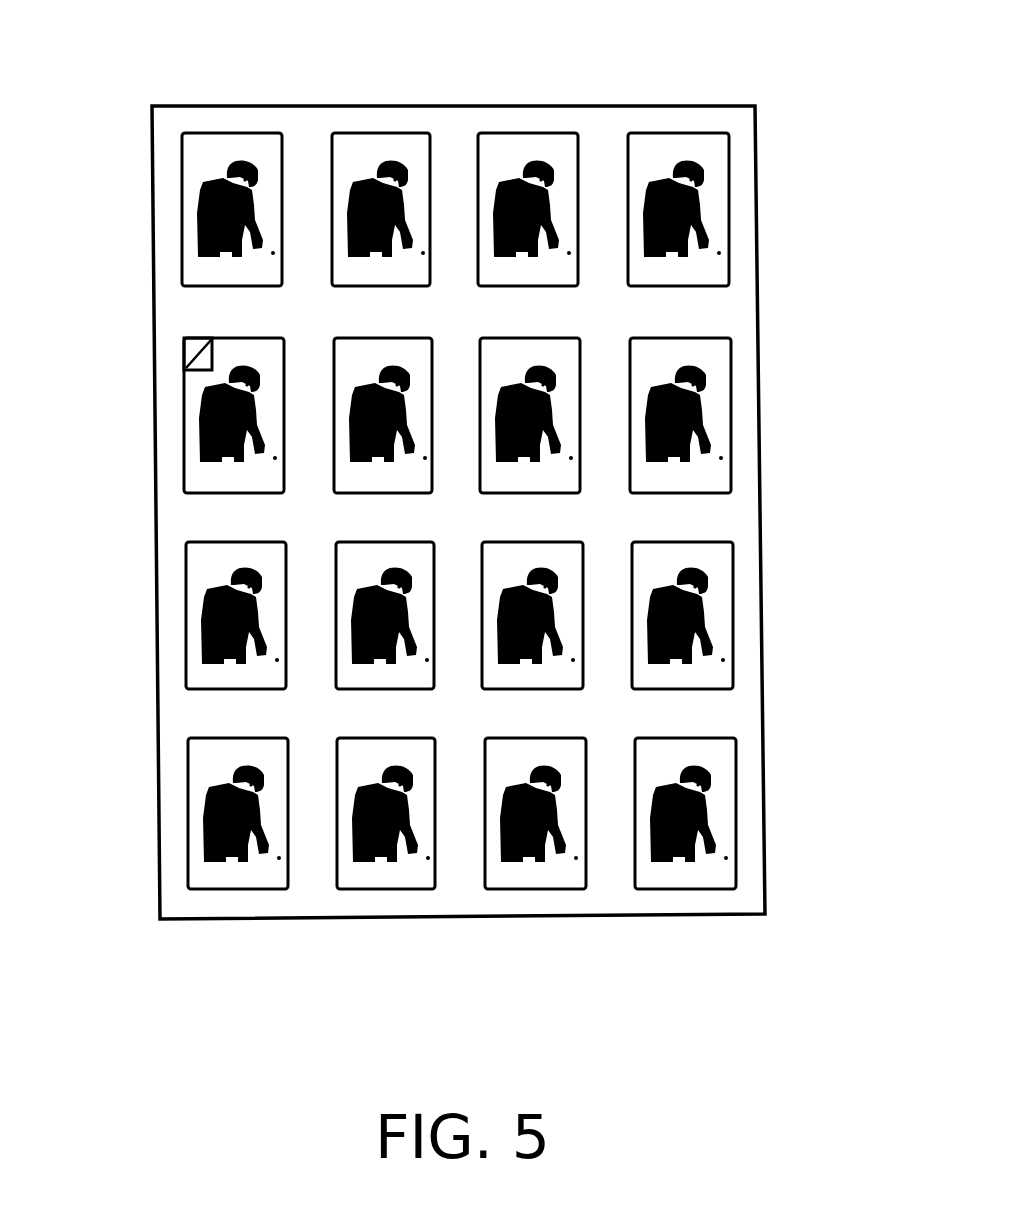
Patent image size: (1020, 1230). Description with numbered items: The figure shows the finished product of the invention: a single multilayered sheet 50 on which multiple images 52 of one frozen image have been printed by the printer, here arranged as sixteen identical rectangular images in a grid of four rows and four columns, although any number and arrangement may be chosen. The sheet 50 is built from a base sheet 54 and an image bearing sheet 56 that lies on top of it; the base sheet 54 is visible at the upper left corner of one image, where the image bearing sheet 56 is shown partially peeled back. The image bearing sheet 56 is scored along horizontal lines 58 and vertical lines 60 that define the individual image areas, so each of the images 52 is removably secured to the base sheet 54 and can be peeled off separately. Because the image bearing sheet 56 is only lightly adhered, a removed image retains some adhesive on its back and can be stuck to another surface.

The multilayered sheet 50 is at (745, 142).
The images 52 is at (347, 146).
The base sheet 54 is at (190, 346).
The image bearing sheet 56 is at (186, 368).
The horizontal lines 58 is at (337, 288).
The vertical lines 60 is at (482, 598).